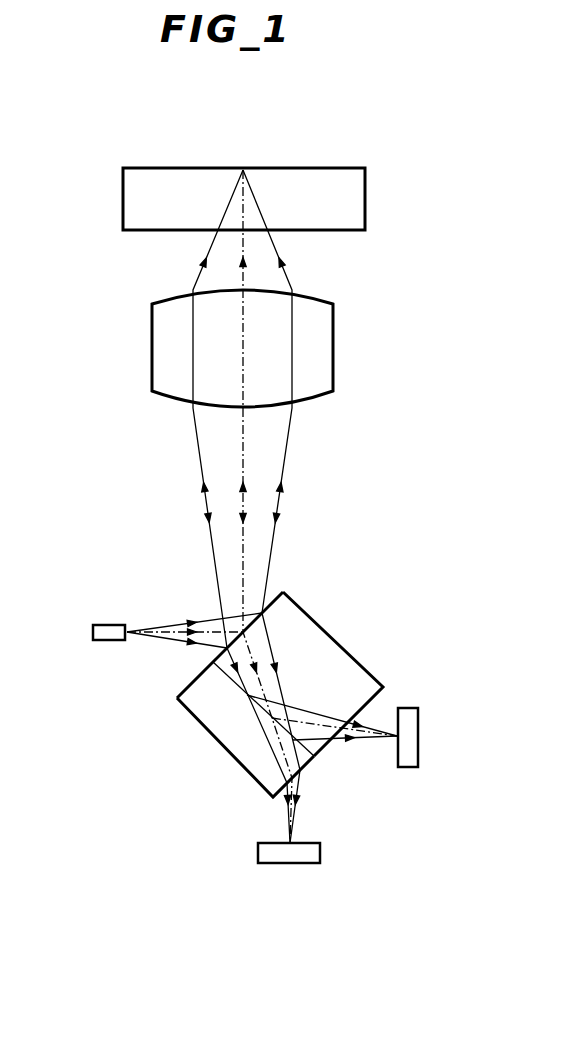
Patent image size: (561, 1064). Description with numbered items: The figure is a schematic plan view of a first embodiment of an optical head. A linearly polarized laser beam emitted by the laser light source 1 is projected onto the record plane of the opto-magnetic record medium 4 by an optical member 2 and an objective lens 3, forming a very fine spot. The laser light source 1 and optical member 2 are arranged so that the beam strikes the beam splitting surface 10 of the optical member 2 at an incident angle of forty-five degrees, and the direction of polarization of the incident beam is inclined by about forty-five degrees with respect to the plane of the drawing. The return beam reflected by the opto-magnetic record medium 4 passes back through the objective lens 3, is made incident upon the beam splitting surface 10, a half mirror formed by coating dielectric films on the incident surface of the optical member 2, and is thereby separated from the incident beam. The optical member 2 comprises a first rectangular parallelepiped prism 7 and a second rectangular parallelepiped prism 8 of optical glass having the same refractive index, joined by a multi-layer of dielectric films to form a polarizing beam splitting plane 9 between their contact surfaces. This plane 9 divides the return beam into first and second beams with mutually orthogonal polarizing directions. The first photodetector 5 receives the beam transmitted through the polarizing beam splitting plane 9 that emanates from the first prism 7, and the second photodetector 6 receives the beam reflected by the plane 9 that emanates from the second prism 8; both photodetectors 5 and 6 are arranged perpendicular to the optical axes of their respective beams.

The laser light source 1 is at (104, 625).
The optical member 2 is at (268, 661).
The objective lens 3 is at (335, 348).
The opto-magnetic record medium 4 is at (334, 170).
The first photodetector 5 is at (322, 853).
The second photodetector 6 is at (420, 735).
The first rectangular parallelepiped prism 7 is at (228, 733).
The second rectangular parallelepiped prism 8 is at (342, 673).
The polarizing beam splitting plane 9 is at (185, 708).
The beam splitting surface 10 is at (280, 592).